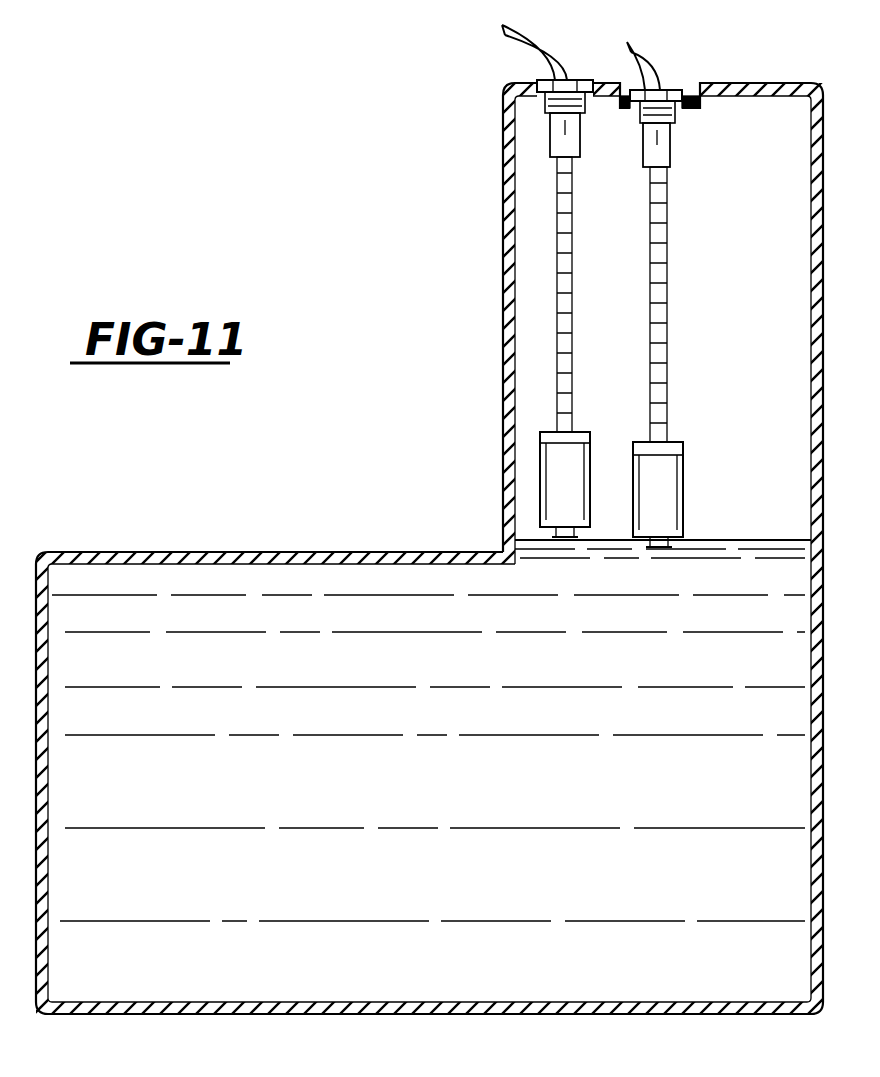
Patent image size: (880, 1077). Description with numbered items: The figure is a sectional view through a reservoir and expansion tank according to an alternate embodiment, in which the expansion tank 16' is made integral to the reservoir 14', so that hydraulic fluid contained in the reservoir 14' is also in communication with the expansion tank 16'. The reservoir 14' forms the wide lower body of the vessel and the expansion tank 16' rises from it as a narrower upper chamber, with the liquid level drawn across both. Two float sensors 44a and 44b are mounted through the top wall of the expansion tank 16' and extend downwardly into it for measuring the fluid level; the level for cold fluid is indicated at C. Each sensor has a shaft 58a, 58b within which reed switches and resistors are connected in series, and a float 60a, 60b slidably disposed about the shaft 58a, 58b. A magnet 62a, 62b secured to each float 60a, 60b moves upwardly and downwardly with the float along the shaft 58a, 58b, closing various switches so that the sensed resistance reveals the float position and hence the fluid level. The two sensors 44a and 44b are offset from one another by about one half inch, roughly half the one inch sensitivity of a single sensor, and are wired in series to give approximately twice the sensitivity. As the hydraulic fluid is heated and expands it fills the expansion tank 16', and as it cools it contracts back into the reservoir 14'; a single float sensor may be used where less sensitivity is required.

The reservoir 14' is at (440, 538).
The expansion tank 16' is at (440, 538).
The float sensor 44a is at (560, 135).
The float sensor 44b is at (667, 150).
The shaft 58a is at (572, 298).
The shaft 58b is at (668, 351).
The float 60a is at (590, 490).
The float 60b is at (686, 510).
The magnet 62a is at (587, 432).
The magnet 62b is at (686, 445).
The cold fluid level C is at (717, 538).